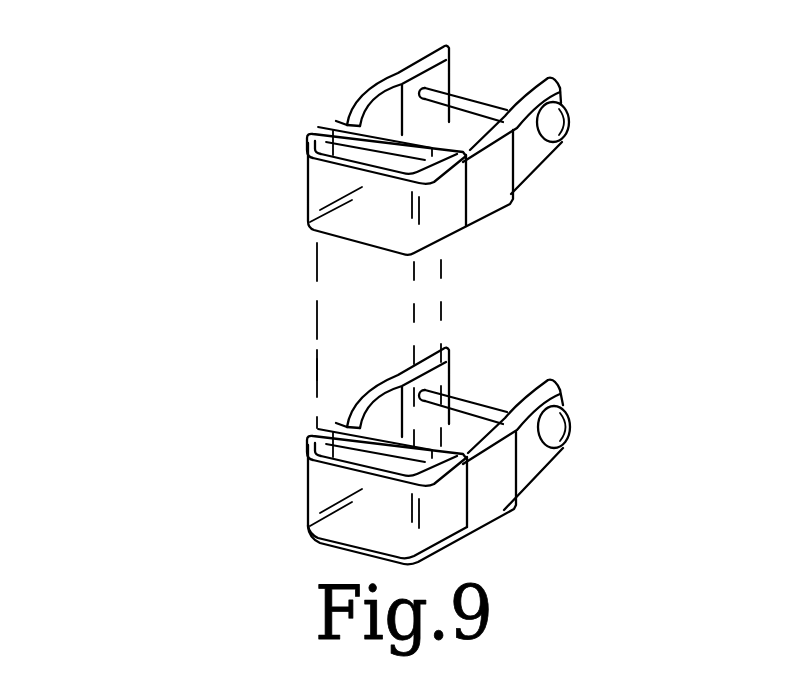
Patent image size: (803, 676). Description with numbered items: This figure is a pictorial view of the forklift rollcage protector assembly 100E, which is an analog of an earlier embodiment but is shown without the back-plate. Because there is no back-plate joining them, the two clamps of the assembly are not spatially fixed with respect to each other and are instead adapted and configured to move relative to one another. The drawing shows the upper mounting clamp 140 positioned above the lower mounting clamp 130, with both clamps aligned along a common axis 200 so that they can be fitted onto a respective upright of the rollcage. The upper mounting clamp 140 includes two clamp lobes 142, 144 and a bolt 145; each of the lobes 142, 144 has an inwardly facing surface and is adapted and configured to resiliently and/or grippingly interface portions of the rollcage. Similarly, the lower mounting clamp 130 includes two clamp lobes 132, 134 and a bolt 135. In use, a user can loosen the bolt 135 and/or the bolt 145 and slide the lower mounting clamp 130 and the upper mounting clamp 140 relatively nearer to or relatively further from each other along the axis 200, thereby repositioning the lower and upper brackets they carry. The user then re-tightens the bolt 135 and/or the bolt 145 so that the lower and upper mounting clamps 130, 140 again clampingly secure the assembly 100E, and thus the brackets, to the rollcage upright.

The rollcage protector assembly 100E is at (264, 91).
The longitudinal axis 200 is at (313, 360).
The upper mounting clamp 140 is at (496, 210).
The clamp lobe 142 is at (530, 153).
The clamp lobe 144 is at (443, 70).
The bolt 145 is at (497, 100).
The lower mounting clamp 130 is at (506, 514).
The clamp lobe 132 is at (537, 452).
The clamp lobe 134 is at (450, 375).
The bolt 135 is at (493, 400).